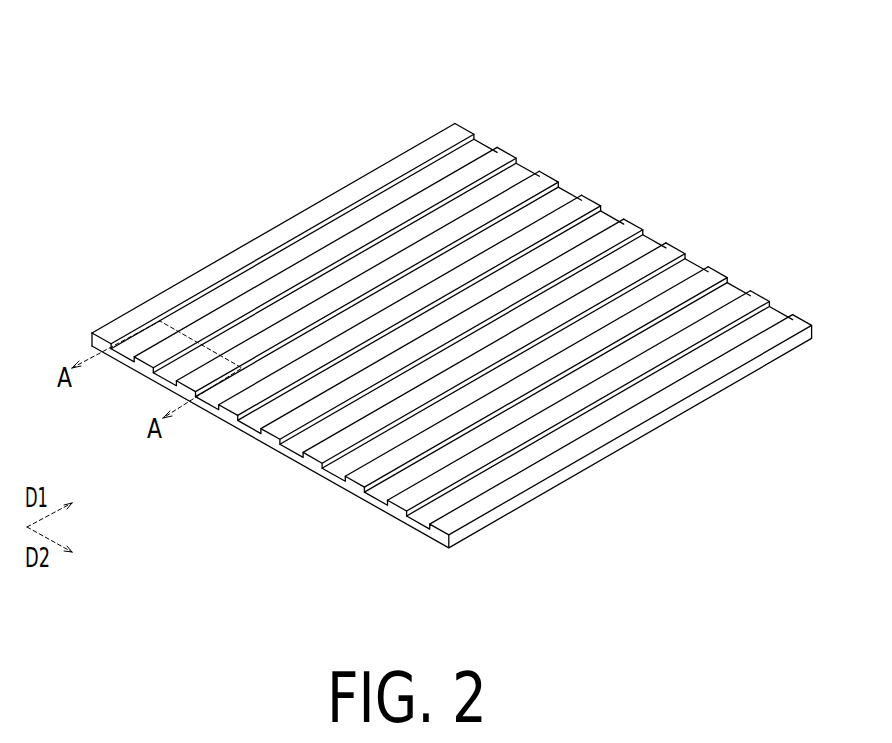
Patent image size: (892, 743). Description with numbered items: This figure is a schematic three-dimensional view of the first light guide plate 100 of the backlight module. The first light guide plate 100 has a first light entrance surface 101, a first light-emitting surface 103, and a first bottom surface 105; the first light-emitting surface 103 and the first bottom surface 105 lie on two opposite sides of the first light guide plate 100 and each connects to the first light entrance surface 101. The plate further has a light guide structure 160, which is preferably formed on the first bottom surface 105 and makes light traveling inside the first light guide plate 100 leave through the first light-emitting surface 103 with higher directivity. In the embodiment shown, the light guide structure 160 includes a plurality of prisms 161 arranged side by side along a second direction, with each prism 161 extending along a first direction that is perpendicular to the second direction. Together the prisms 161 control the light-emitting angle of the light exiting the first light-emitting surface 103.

The first light guide plate 100 is at (118, 25).
The first light entrance surface 101 is at (91, 333).
The first light-emitting surface 103 is at (345, 493).
The first bottom surface 105 is at (364, 182).
The light guide structure 160 is at (442, 306).
The prism 161 is at (458, 126).